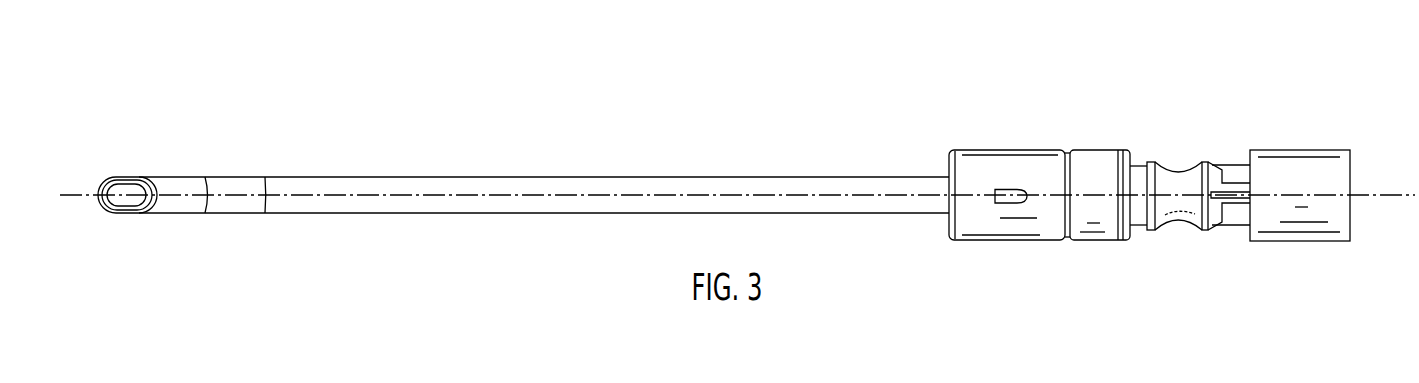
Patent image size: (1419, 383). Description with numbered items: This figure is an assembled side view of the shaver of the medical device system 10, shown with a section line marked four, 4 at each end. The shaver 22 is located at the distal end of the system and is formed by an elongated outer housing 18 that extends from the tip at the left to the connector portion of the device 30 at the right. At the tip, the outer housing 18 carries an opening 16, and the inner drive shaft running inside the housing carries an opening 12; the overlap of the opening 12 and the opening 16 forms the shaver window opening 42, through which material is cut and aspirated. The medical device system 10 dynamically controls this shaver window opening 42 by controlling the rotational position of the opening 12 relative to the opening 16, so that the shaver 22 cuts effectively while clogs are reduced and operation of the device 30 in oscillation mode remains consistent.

The section line 4- 4 is at (62, 195).
The medical device system 10 is at (703, 52).
The opening in inner drive shaft 12 is at (150, 217).
The opening in outer housing 16 is at (98, 175).
The outer housing 18 is at (513, 176).
The shaver 22 is at (82, 99).
The device 30 is at (867, 137).
The shaver window opening 42 is at (125, 200).